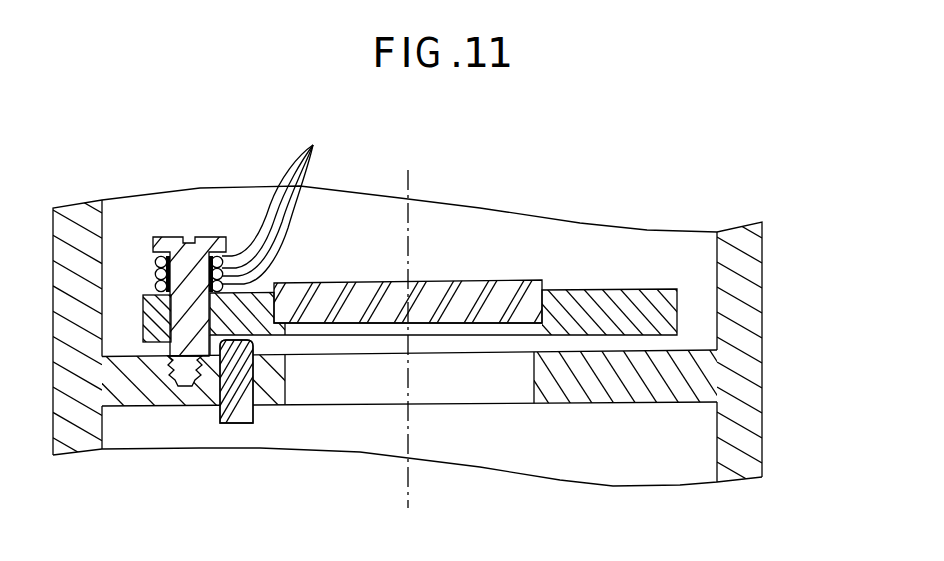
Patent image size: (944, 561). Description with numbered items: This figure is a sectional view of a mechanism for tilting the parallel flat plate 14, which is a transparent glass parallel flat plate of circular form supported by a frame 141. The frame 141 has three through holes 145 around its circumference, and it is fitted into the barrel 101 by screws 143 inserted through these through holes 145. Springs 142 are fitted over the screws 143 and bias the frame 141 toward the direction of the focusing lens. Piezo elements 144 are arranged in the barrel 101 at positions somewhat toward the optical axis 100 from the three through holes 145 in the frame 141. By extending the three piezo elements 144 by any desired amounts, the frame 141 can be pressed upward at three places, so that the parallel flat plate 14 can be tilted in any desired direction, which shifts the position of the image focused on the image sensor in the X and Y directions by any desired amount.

The parallel flat plate 14 is at (513, 281).
The optical axis 100 is at (409, 238).
The barrel 101 is at (755, 332).
The frame 141 is at (652, 289).
The springs 142 is at (294, 206).
The screws 143 is at (204, 237).
The piezo elements 144 is at (237, 412).
The through holes 145 is at (153, 342).